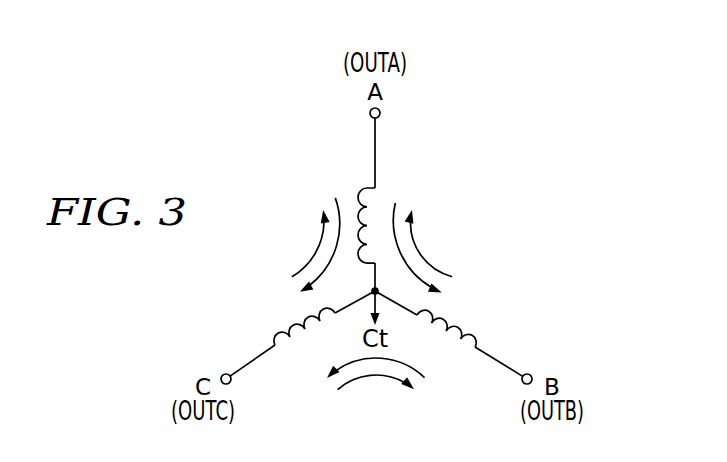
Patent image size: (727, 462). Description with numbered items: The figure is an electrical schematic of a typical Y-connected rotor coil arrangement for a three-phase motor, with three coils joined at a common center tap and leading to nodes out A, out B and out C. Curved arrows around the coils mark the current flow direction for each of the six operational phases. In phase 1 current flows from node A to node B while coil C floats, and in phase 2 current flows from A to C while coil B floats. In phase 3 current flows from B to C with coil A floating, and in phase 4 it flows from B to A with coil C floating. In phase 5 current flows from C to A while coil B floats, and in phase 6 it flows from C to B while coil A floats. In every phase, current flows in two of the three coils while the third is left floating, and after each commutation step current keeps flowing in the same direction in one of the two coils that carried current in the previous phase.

The phase 1 current flow direction 1 is at (396, 237).
The phase 2 current flow direction 2 is at (340, 226).
The phase 3 current flow direction 3 is at (388, 358).
The phase 4 current flow direction 4 is at (423, 257).
The phase 5 current flow direction 5 is at (320, 247).
The phase 6 current flow direction 6 is at (355, 378).